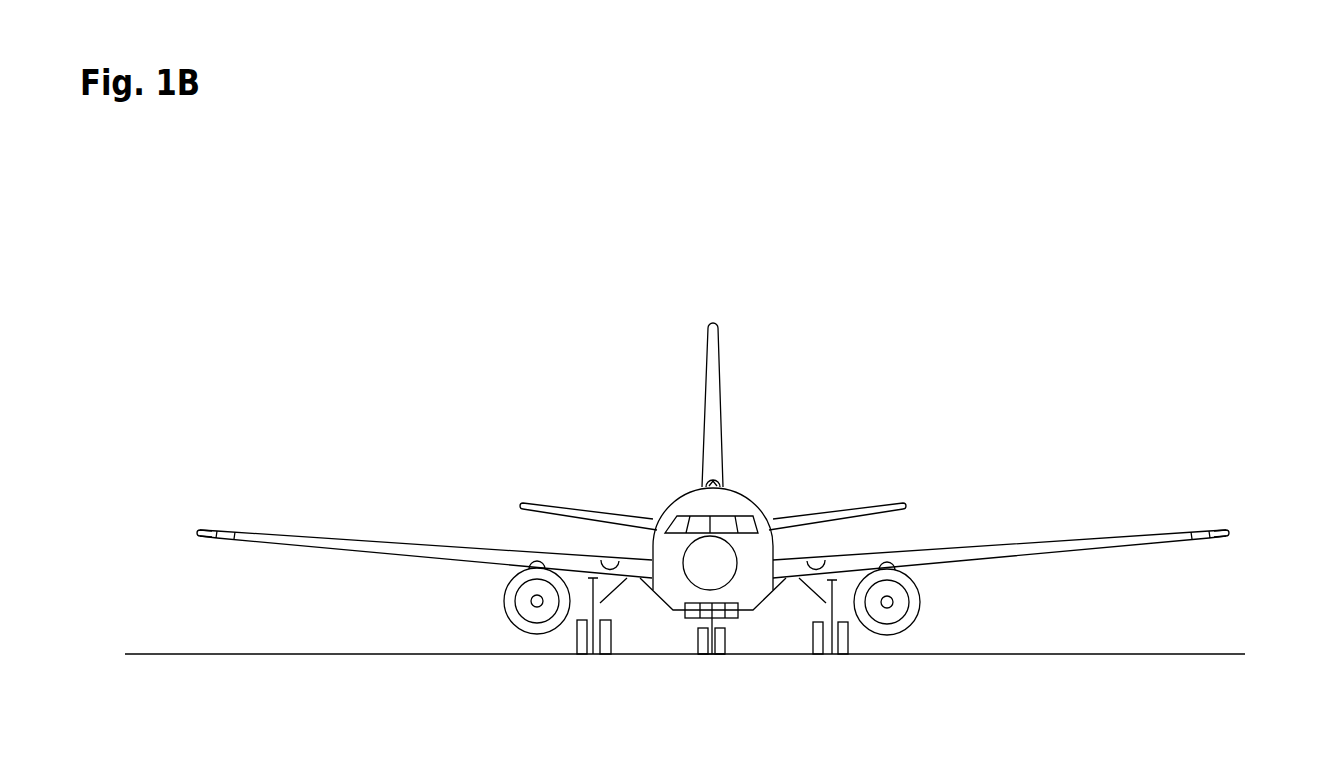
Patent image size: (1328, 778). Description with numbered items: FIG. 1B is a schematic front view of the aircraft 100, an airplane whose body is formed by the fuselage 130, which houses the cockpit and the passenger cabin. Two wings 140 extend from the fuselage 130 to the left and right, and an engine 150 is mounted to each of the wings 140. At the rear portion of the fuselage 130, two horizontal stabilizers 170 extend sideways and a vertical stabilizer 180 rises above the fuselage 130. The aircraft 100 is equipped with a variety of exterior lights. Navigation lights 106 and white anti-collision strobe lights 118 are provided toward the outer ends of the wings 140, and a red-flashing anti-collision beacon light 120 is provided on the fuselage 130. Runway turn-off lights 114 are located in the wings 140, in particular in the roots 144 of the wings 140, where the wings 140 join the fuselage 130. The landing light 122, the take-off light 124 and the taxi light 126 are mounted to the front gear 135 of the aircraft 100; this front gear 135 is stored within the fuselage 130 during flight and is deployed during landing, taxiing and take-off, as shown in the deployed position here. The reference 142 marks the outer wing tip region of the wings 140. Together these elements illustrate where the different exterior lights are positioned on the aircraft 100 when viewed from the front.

The aircraft 100 is at (738, 508).
The navigation light 106 is at (211, 528).
The runway turn-off light 114 is at (601, 558).
The white anti-collision strobe light 118 is at (229, 529).
The red-flashing anti-collision beacon light 120 is at (718, 478).
The landing light 122 is at (740, 612).
The take-off light 124 is at (684, 612).
The taxi light 126 is at (704, 623).
The fuselage 130 is at (679, 481).
The front gear 135 is at (722, 660).
The wing 140 is at (340, 513).
The winglet 142 is at (195, 553).
The root of the wing 144 is at (634, 608).
The engine 150 is at (500, 598).
The horizontal stabilizer 170 is at (577, 491).
The vertical stabilizer 180 is at (740, 366).